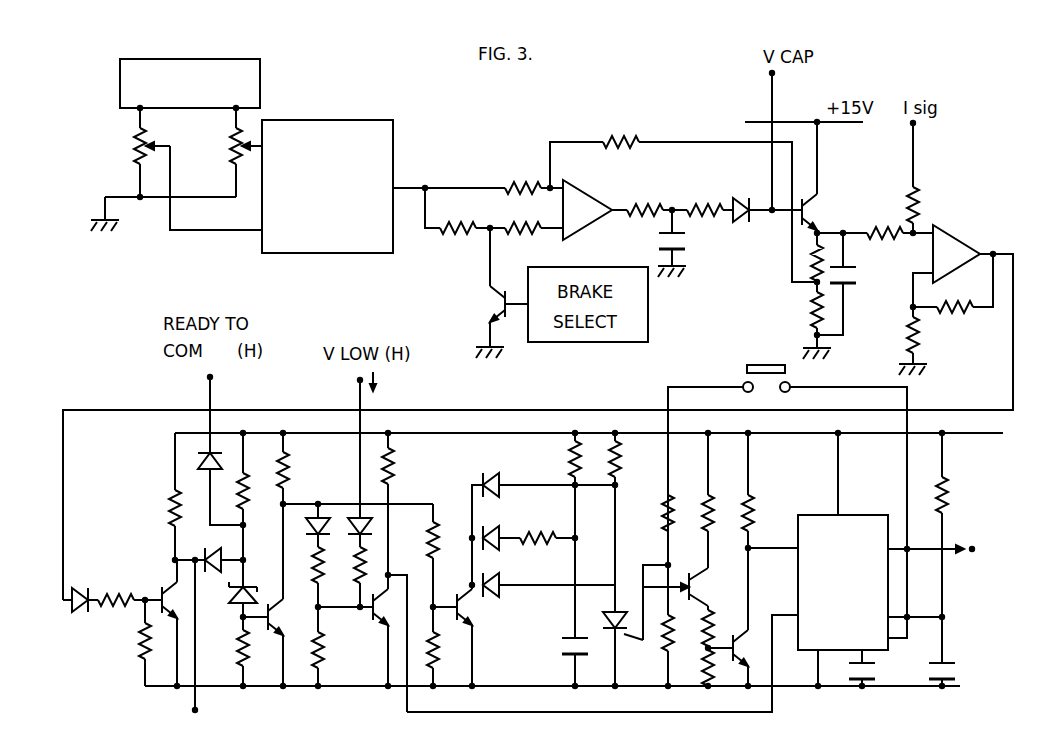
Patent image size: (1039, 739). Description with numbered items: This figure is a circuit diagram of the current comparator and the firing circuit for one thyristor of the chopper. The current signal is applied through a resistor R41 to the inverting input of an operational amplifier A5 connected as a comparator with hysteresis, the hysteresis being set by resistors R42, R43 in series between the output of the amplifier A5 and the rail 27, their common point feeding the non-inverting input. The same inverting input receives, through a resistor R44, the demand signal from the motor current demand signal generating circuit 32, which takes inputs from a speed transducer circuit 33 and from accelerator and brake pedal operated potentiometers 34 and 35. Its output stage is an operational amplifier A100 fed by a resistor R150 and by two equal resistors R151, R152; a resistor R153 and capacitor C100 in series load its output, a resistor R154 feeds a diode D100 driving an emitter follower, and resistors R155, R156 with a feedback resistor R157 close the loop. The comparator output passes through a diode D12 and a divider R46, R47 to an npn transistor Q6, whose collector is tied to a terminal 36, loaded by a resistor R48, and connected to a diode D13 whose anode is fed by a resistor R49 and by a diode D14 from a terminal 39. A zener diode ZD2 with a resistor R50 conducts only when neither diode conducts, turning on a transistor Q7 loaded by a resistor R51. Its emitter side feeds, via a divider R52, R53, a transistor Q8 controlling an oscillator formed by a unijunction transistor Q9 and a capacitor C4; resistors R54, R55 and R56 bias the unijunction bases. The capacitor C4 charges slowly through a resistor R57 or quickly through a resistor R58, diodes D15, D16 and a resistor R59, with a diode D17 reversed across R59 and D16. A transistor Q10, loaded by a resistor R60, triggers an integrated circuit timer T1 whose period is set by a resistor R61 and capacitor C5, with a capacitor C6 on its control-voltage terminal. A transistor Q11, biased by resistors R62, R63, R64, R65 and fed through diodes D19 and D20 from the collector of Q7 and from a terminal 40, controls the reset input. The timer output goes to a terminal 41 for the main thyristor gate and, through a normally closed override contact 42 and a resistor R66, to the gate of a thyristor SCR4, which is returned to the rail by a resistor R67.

The speed transducer circuit 33 is at (212, 58).
The motor current demand signal generating circuit 32 is at (330, 120).
The accelerator pedal operated potentiometer 34 is at (131, 163).
The brake pedal operated potentiometer 35 is at (227, 157).
The resistor R150 is at (518, 181).
The resistor R151 is at (452, 238).
The resistor R152 is at (519, 238).
The resistor R153 is at (640, 199).
The resistor R154 is at (700, 219).
The resistor R155 is at (809, 262).
The resistor R156 is at (809, 320).
The feedback resistor R157 is at (616, 134).
The operational amplifier A100 is at (601, 184).
The diode D100 is at (728, 199).
The capacitor C100 is at (656, 244).
The resistor R44 is at (874, 226).
The resistor R41 is at (922, 201).
The resistor R42 is at (951, 316).
The resistor R43 is at (906, 340).
The operational amplifier A5 is at (956, 254).
The normally closed override contact 42 is at (756, 365).
The terminal 39 is at (207, 378).
The terminal 40 is at (357, 381).
The terminal 41 is at (972, 553).
The terminal 36 is at (180, 642).
The rail 27 is at (330, 690).
The diode D14 is at (197, 461).
The diode D13 is at (218, 557).
The diode D12 is at (75, 590).
The diode D19 is at (313, 511).
The diode D20 is at (366, 516).
The diode D15 is at (500, 478).
The diode D16 is at (498, 525).
The diode D17 is at (500, 597).
The zener diode ZD2 is at (236, 596).
The resistor R46 is at (110, 590).
The resistor R47 is at (142, 641).
The resistor R48 is at (168, 512).
The resistor R49 is at (258, 496).
The resistor R50 is at (238, 652).
The resistor R51 is at (301, 468).
The resistor R52 is at (425, 551).
The resistor R53 is at (436, 649).
The resistor R54 is at (714, 629).
The resistor R55 is at (705, 676).
The resistor R56 is at (706, 516).
The resistor R57 is at (570, 476).
The resistor R58 is at (622, 476).
The resistor R59 is at (550, 546).
The resistor R60 is at (746, 513).
The resistor R61 is at (947, 501).
The resistor R62 is at (389, 479).
The resistor R63 is at (323, 649).
The resistor R64 is at (315, 576).
The resistor R65 is at (357, 576).
The resistor R66 is at (665, 521).
The resistor R67 is at (690, 656).
The npn transistor Q6 is at (160, 596).
The npn transistor Q7 is at (272, 619).
The npn transistor Q8 is at (458, 601).
The unijunction transistor Q9 is at (692, 576).
The transistor Q10 is at (747, 617).
The npn transistor Q11 is at (372, 612).
The thyristor SCR4 is at (618, 636).
The integrated circuit timer T1 is at (822, 512).
The capacitor C4 is at (560, 646).
The capacitor C5 is at (954, 651).
The capacitor C6 is at (854, 666).